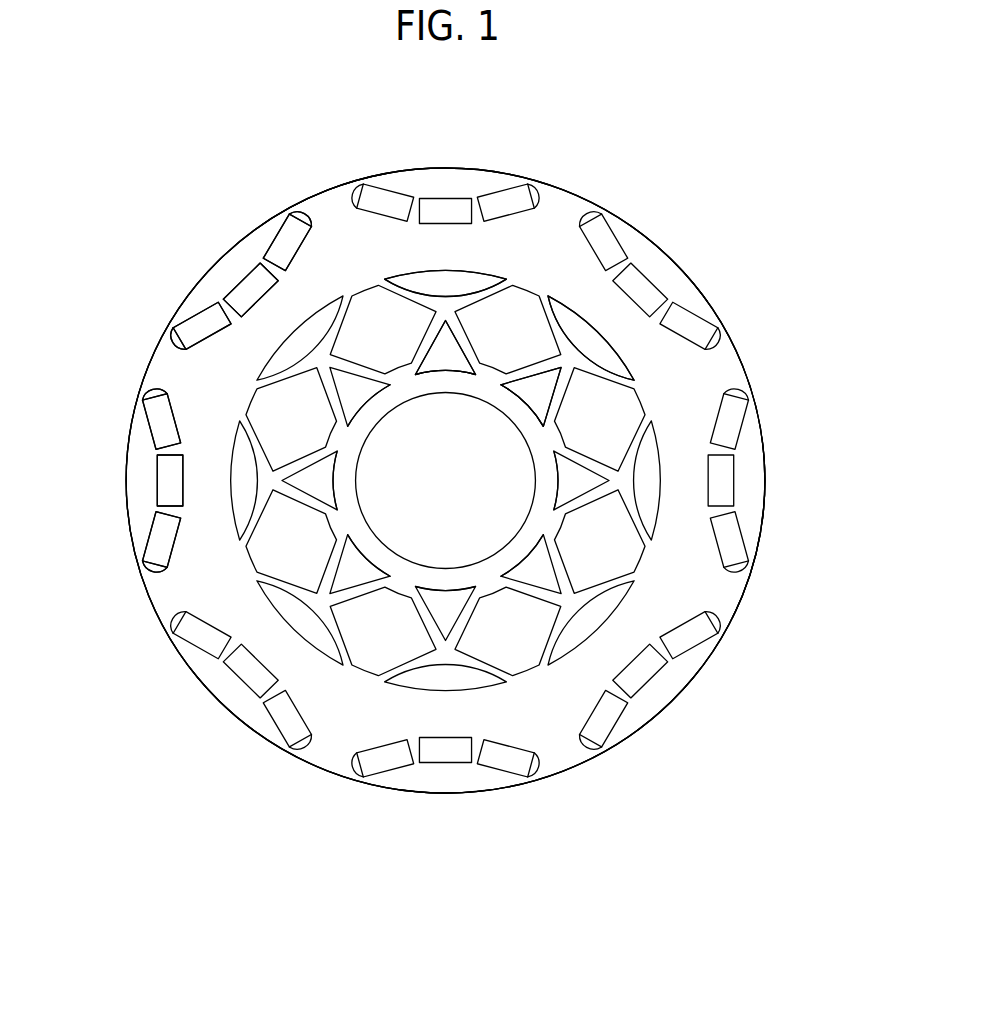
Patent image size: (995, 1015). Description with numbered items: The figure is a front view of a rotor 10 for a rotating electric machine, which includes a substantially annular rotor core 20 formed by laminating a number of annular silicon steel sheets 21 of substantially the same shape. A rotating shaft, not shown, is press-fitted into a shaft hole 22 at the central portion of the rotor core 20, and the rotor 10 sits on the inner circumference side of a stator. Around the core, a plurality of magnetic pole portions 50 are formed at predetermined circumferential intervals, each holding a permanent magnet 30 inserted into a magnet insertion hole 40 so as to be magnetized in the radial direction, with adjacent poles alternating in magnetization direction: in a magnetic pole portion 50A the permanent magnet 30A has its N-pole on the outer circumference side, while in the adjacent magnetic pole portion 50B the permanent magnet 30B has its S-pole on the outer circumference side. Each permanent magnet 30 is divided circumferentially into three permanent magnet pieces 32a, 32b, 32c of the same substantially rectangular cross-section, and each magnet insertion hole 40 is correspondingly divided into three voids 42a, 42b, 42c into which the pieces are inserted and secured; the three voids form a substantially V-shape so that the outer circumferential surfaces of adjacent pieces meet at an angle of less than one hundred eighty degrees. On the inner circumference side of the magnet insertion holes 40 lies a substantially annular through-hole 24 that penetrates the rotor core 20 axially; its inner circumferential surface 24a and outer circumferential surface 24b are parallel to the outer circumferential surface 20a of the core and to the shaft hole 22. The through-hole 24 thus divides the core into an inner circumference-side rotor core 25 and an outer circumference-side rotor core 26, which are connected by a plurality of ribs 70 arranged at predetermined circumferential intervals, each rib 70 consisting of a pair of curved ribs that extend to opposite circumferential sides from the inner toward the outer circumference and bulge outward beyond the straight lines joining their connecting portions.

The rotor 10 is at (718, 113).
The rotor core 20 is at (748, 357).
The silicon steel sheet 21 is at (487, 480).
The outer circumferential surface 20a is at (666, 262).
The shaft hole 22 is at (533, 494).
The through-hole 24 is at (524, 318).
The inner circumferential surface 24a is at (495, 268).
The outer circumferential surface 24b is at (525, 403).
The inner circumference-side rotor core 25 is at (403, 388).
The outer circumference-side rotor core 26 is at (337, 222).
The permanent magnet 30 is at (727, 493).
The permanent magnet 30A is at (641, 678).
The permanent magnet 30B is at (240, 667).
The permanent magnet piece 32a is at (155, 535).
The permanent magnet piece 32b is at (167, 478).
The permanent magnet piece 32c is at (165, 428).
The magnet insertion hole 40 is at (741, 573).
The void 42a is at (203, 323).
The void 42b is at (247, 286).
The void 42c is at (278, 237).
The magnetic pole portion 50 is at (761, 476).
The magnetic pole portion 50A is at (221, 692).
The magnetic pole portion 50B is at (444, 784).
The rib 70 is at (445, 285).